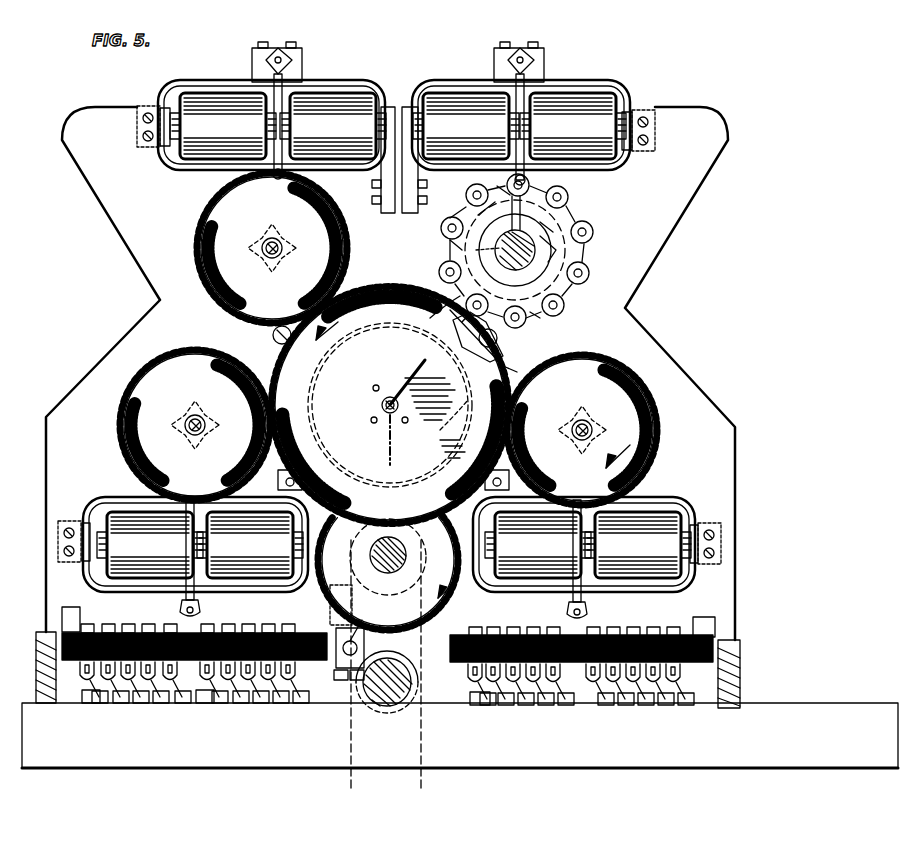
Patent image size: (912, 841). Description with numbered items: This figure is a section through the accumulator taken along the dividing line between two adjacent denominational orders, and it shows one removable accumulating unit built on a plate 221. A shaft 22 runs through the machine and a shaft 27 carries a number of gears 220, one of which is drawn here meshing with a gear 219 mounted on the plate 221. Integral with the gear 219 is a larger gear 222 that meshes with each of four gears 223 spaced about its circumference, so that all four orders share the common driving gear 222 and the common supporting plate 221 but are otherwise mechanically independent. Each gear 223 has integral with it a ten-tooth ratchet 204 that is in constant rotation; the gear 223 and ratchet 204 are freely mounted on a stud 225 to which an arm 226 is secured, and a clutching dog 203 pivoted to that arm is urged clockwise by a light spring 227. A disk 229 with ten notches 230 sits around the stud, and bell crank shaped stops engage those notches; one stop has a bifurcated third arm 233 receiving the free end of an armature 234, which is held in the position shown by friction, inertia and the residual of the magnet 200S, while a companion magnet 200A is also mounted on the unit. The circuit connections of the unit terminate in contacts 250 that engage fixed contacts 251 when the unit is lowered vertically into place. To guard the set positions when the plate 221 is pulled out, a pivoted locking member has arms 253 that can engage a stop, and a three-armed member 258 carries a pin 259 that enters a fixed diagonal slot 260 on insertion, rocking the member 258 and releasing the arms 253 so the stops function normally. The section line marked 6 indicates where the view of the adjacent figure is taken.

The section line 6- 6 is at (600, 206).
The shaft 22 is at (390, 688).
The shaft 27 is at (399, 553).
The motor A 200A is at (430, 335).
The magnet 200S is at (361, 335).
The clutching dog 203 is at (556, 222).
The ten-tooth ratchet 204 is at (278, 268).
The gear 219 is at (408, 412).
The gear 220 is at (428, 630).
The plate 221 is at (664, 247).
The large gear 222 is at (498, 377).
The gear 223 is at (388, 339).
The stud 225 is at (572, 251).
The arm 226 is at (478, 258).
The spring 227 is at (560, 247).
The disk 229 is at (536, 315).
The notch 230 is at (478, 288).
The third arm 233 is at (498, 189).
The armature 234 is at (523, 102).
The contacts 250 is at (682, 634).
The fixed contacts 251 is at (700, 712).
The arms 253 is at (448, 318).
The three-armed member 258 is at (330, 597).
The pin 259 is at (352, 632).
The diagonal slot 260 is at (336, 630).